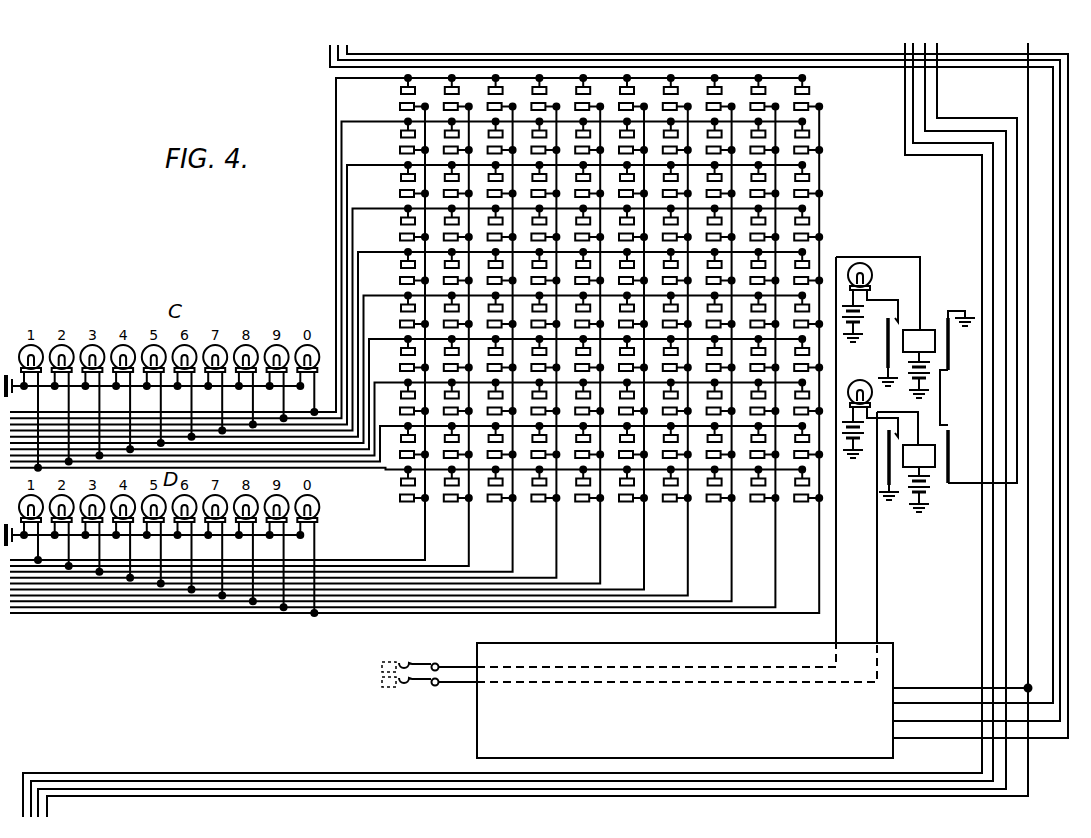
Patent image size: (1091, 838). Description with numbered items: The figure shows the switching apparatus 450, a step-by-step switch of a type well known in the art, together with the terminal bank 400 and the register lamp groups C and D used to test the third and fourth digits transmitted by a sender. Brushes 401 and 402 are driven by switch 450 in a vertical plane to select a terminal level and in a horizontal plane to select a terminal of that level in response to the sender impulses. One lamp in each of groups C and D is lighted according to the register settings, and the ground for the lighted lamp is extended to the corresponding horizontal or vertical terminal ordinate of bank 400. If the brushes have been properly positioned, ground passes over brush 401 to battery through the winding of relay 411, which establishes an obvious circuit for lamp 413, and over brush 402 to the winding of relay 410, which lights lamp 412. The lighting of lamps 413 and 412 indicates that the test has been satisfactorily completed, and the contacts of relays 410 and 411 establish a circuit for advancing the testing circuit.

The bank 400 is at (699, 385).
The brush 401 is at (422, 658).
The brush 402 is at (420, 688).
The relay 410 is at (927, 462).
The relay 411 is at (922, 335).
The lamp 412 is at (873, 393).
The lamp 413 is at (873, 276).
The switch 450 is at (685, 700).